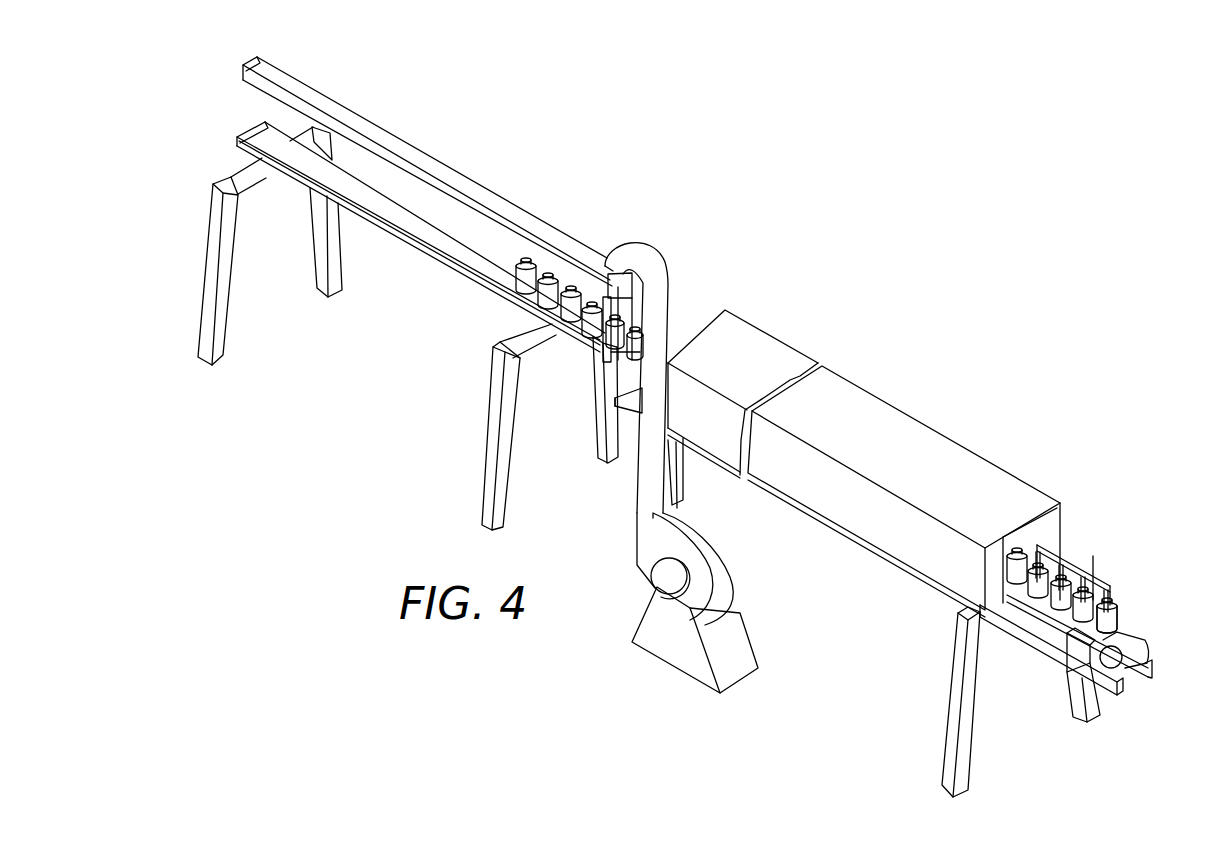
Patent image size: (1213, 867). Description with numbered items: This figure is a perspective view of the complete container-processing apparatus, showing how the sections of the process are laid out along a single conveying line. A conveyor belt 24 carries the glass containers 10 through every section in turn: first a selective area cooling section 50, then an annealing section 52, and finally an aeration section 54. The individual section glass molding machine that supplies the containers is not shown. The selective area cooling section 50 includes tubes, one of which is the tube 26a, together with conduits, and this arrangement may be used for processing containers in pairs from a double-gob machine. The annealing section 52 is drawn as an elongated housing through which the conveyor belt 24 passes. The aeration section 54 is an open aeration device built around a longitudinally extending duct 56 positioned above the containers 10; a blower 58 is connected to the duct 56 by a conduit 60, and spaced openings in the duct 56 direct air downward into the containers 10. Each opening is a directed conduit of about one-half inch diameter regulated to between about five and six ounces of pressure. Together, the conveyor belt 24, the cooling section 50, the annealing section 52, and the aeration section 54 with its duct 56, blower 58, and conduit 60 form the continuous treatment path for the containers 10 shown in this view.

The aeration section 54 is at (531, 129).
The longitudinally extending duct 56 is at (565, 231).
The conduit 60 is at (652, 246).
The blower 58 is at (723, 548).
The annealing section 52 is at (941, 385).
The selective area cooling section 50 is at (1112, 511).
The tube 26a is at (1110, 586).
The container 10 is at (1120, 612).
The conveyor belt 24 is at (1128, 636).